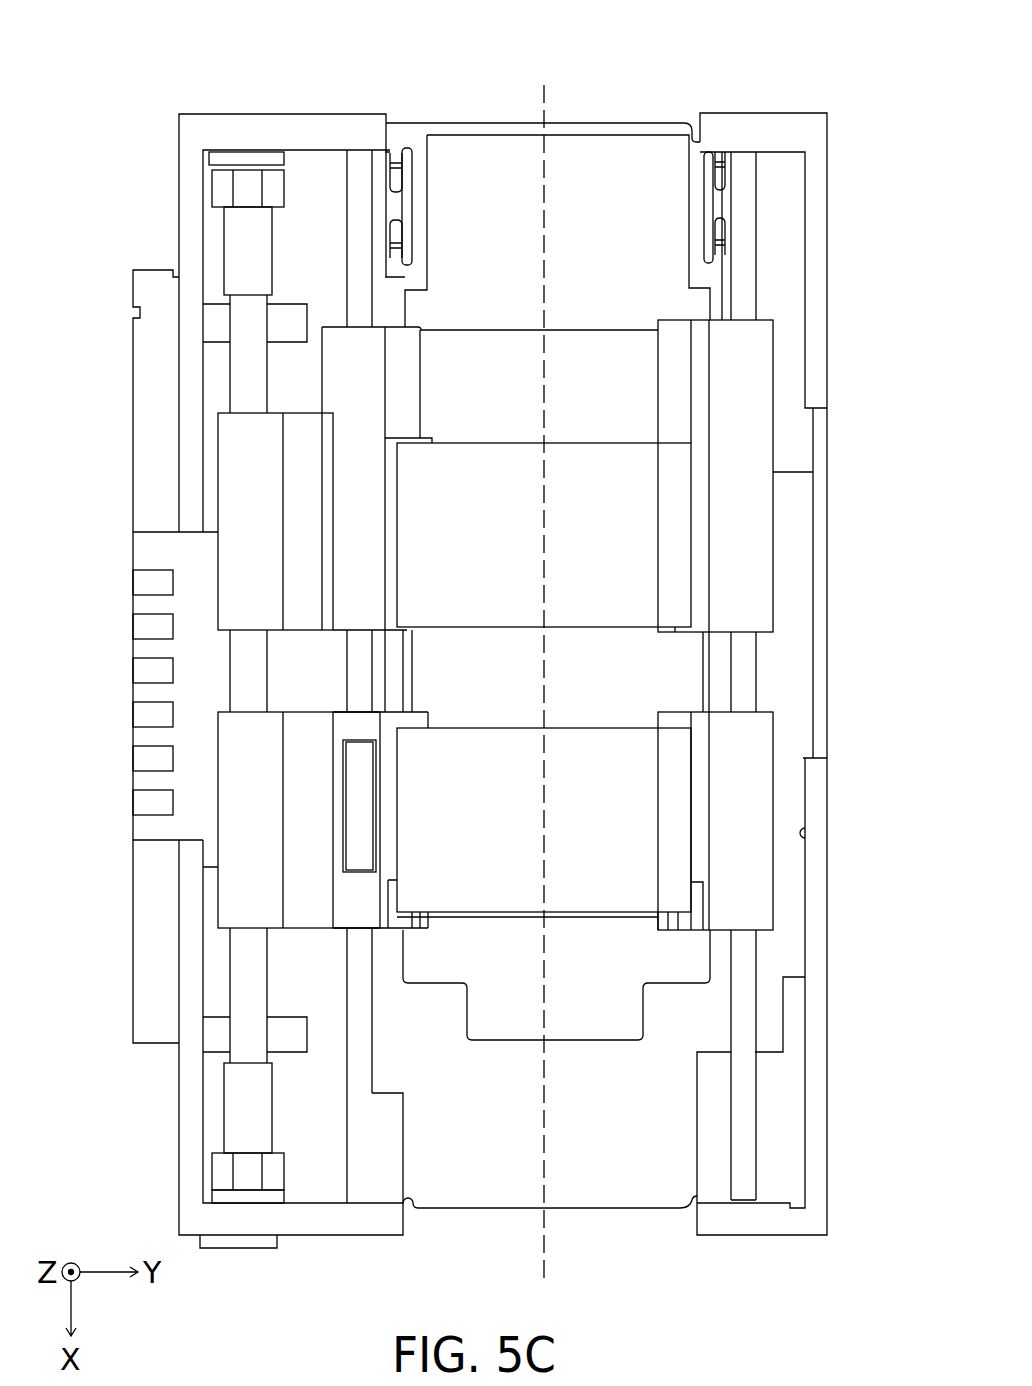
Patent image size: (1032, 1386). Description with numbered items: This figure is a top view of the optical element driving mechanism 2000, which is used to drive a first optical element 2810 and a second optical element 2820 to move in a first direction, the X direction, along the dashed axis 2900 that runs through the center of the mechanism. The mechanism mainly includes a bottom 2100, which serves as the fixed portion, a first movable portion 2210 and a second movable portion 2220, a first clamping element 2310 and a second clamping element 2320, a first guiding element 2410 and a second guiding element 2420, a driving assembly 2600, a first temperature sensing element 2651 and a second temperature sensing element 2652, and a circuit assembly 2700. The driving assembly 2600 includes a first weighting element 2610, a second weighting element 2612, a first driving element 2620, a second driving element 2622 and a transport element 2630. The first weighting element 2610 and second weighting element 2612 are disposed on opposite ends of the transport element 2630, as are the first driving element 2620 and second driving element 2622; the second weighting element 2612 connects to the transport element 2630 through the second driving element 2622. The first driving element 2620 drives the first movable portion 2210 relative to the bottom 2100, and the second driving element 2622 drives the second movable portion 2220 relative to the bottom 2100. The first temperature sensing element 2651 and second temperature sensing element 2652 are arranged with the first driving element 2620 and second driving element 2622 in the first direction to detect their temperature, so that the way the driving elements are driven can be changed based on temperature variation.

The optical element driving mechanism 2000 is at (118, 29).
The optical axis 2900 is at (545, 659).
The bottom 2100 is at (190, 493).
The circuit assembly 2700 is at (190, 778).
The second guiding element 2420 is at (350, 652).
The first guiding element 2410 is at (747, 670).
The second movable portion 2220 is at (333, 368).
The first movable portion 2210 is at (757, 872).
The second clamping element 2320 is at (240, 436).
The first clamping element 2310 is at (240, 895).
The second optical element 2820 is at (657, 535).
The first optical element 2810 is at (657, 807).
The transport element 2630 is at (240, 692).
The first driving element 2620 is at (237, 252).
The second driving element 2622 is at (240, 1107).
The first weighting element 2610 is at (220, 190).
The second weighting element 2612 is at (220, 1170).
The first temperature sensing element 2651 is at (220, 158).
The second temperature sensing element 2652 is at (220, 1195).
The driving assembly 2600 is at (296, 1183).